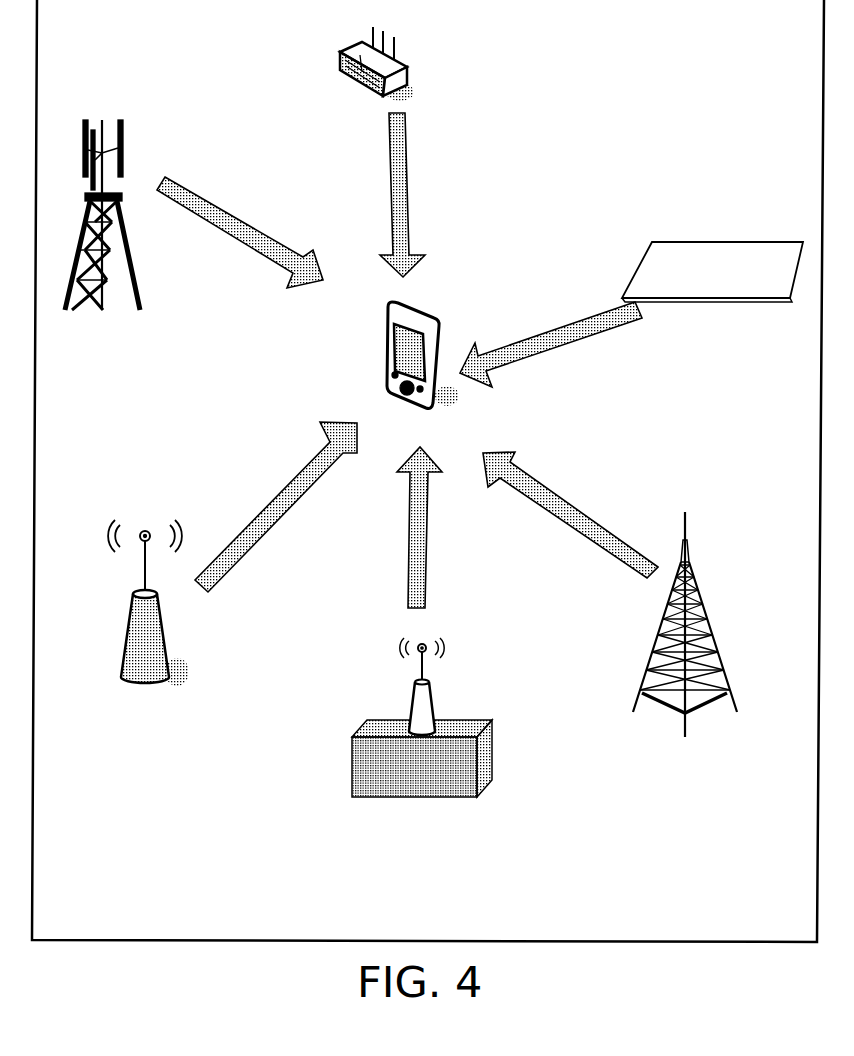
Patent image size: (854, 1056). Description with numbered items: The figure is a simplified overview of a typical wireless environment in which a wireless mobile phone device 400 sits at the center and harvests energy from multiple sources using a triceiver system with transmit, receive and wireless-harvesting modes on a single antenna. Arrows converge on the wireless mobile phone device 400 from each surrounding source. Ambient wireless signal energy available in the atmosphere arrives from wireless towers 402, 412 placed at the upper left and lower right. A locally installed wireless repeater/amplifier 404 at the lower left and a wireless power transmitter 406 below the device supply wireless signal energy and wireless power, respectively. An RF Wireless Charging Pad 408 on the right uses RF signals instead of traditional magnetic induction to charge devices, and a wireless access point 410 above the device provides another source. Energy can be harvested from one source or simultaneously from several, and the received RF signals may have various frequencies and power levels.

The wireless mobile phone device 400 is at (428, 353).
The wireless tower 402 is at (102, 235).
The wireless repeater/amplifier 404 is at (148, 624).
The wireless power transmitter 406 is at (422, 741).
The RF Wireless Charging Pad 408 is at (713, 289).
The wireless access point 410 is at (404, 64).
The wireless tower 412 is at (685, 638).